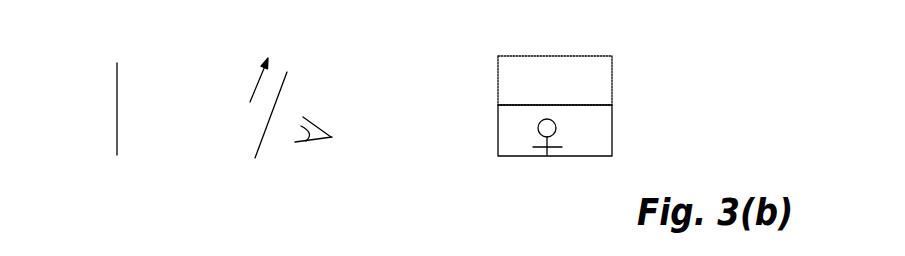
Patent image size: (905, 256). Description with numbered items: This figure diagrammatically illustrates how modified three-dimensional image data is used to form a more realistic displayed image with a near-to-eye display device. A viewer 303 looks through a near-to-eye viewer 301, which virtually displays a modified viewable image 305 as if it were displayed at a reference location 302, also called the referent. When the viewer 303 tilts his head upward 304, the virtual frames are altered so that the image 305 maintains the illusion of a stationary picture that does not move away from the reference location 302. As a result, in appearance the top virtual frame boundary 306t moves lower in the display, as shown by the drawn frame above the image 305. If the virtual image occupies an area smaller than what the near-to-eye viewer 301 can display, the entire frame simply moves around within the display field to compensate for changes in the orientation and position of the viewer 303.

The near-to-eye viewer 301 is at (255, 152).
The reference location 302 is at (117, 148).
The viewer 303 is at (324, 131).
The upward head tilt 304 is at (260, 80).
The modified viewable image 305 is at (543, 170).
The top virtual frame boundary 306t is at (587, 105).